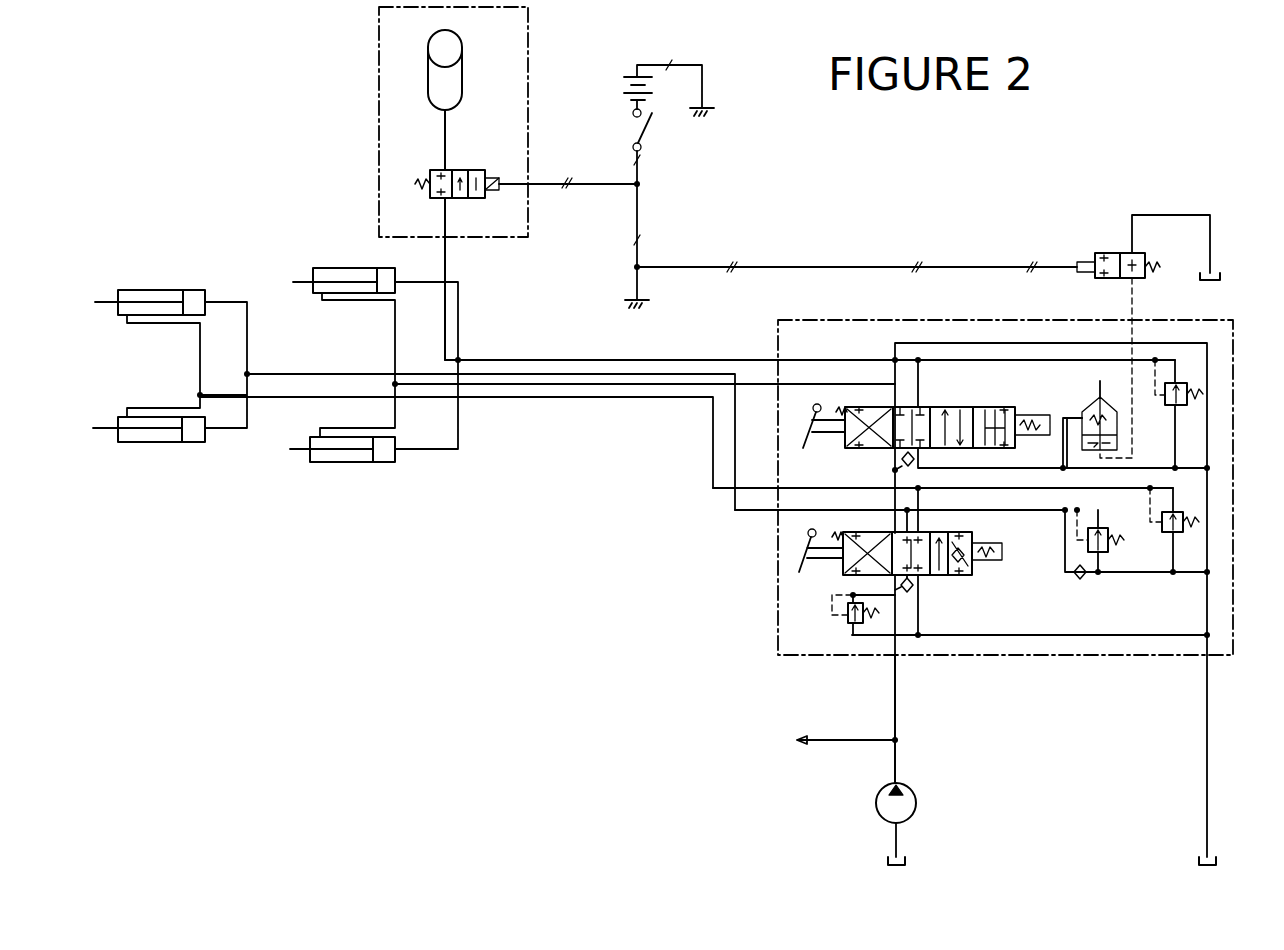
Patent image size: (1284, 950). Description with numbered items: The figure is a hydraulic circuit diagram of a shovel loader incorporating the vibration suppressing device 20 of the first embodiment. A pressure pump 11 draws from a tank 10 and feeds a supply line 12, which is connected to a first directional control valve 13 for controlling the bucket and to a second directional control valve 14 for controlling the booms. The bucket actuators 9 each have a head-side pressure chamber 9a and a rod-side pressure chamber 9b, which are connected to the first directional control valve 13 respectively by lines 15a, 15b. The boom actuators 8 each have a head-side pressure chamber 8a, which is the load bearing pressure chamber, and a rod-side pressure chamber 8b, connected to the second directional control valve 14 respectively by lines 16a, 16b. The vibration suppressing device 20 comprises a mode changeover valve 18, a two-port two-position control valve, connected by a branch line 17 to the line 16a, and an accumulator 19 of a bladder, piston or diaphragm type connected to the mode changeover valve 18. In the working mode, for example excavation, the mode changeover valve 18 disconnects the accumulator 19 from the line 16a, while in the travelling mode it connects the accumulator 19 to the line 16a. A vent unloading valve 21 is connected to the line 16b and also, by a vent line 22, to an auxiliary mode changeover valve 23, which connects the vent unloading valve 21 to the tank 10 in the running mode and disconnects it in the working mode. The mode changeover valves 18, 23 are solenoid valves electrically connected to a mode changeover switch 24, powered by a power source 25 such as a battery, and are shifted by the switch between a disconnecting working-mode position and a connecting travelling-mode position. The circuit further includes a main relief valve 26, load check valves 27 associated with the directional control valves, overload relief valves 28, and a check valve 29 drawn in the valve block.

The boom actuator 8 is at (314, 268).
The head-side pressure chamber 8a is at (388, 274).
The rod-side pressure chamber 8b is at (343, 268).
The bucket actuator 9 is at (110, 289).
The head-side pressure chamber 9a is at (197, 290).
The rod-side pressure chamber 9b is at (160, 290).
The tank 10 is at (1216, 274).
The pressure pump 11 is at (917, 800).
The supply line 12 is at (895, 700).
The first directional control valve 13 is at (964, 574).
The second directional control valve 14 is at (834, 450).
The line 15a is at (324, 372).
The line 15b is at (300, 398).
The line 16a is at (547, 358).
The line 16b is at (578, 398).
The branch line 17 is at (446, 256).
The mode changeover valve 18 is at (462, 170).
The accumulator 19 is at (462, 68).
The vibration suppressing device 20 is at (529, 66).
The vent unloading valve 21 is at (1070, 414).
The vent line 22 is at (1134, 304).
The auxiliary mode changeover valve 23 is at (1114, 252).
The mode changeover switch 24 is at (648, 122).
The power source 25 is at (624, 102).
The main relief valve 26 is at (840, 626).
The load check valve 27 is at (900, 460).
The overload relief valve 28 is at (1188, 384).
The check valve 29 is at (1080, 580).